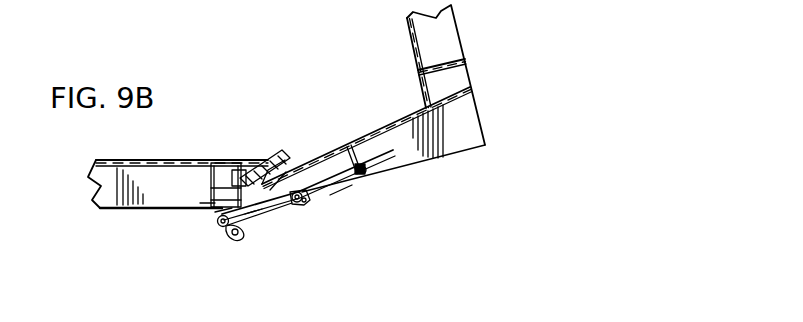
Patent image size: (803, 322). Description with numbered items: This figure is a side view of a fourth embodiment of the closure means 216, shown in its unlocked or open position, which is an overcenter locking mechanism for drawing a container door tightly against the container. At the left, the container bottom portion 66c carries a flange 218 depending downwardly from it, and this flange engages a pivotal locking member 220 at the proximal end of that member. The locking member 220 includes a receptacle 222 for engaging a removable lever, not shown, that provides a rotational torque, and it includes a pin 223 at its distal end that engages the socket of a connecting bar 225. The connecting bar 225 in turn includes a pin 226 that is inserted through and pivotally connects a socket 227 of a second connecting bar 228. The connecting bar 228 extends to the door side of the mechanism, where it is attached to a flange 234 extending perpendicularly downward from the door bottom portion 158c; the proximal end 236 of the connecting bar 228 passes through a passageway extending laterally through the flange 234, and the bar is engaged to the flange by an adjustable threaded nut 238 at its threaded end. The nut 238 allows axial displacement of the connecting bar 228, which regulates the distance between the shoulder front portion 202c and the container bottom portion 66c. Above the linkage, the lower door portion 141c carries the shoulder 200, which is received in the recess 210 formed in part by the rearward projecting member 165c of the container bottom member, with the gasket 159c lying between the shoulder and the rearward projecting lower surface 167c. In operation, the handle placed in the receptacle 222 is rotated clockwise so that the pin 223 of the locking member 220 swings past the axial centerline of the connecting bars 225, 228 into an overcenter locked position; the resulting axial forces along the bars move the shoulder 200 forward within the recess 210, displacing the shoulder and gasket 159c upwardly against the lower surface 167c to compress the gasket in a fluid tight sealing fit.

The lower door portion 141c is at (382, 126).
The door bottom portion 158c is at (305, 198).
The gasket 159c is at (290, 156).
The rearward projecting member 165c is at (266, 162).
The rearward projecting lower surface 167c is at (240, 173).
The shoulder 200 is at (281, 166).
The shoulder front portion 202c is at (205, 208).
The recess 210 is at (213, 203).
The closure means 216 is at (357, 222).
The flange 218 is at (222, 211).
The pivotal locking member 220 is at (224, 238).
The receptacle 222 is at (241, 242).
The pin 223 is at (221, 223).
The connecting bar 225 is at (251, 212).
The pin 226 is at (323, 183).
The socket 227 is at (291, 205).
The connecting bar 228 is at (350, 200).
The flange 234 is at (352, 150).
The proximal end 236 is at (341, 192).
The adjustable threaded nut 238 is at (366, 172).
The container bottom portion 66c is at (226, 177).